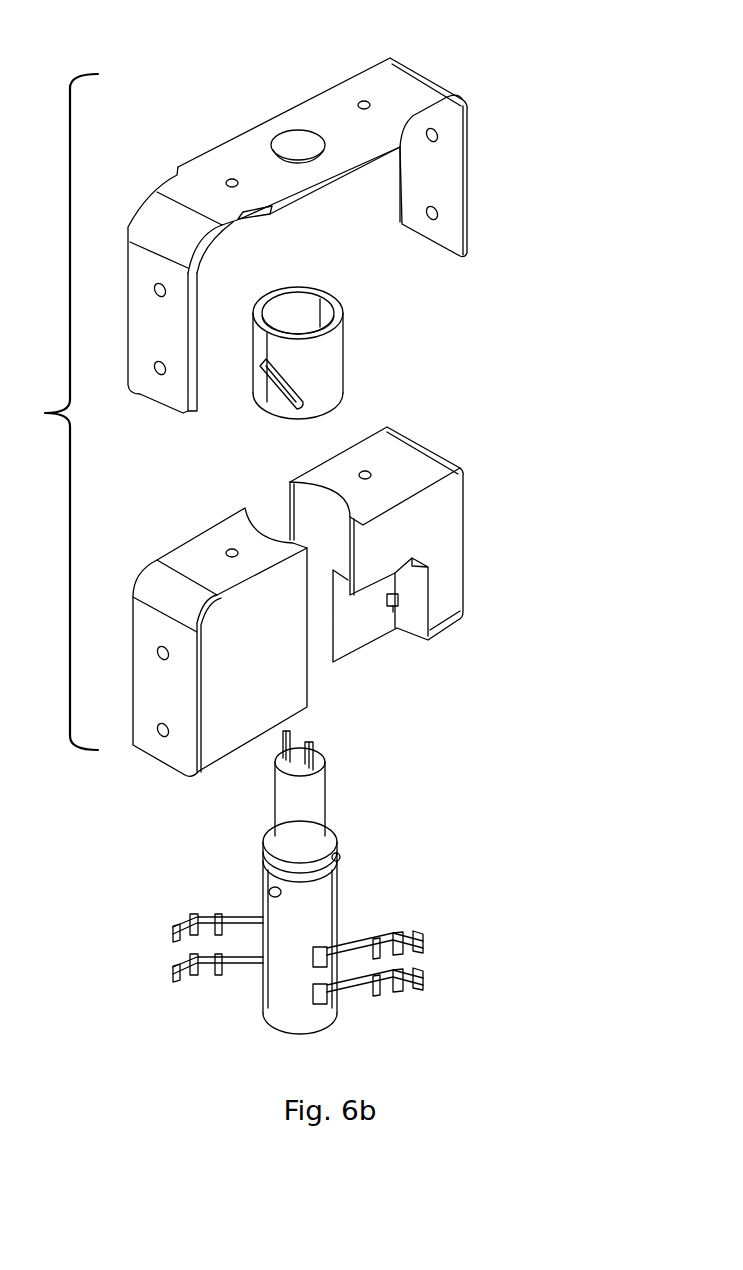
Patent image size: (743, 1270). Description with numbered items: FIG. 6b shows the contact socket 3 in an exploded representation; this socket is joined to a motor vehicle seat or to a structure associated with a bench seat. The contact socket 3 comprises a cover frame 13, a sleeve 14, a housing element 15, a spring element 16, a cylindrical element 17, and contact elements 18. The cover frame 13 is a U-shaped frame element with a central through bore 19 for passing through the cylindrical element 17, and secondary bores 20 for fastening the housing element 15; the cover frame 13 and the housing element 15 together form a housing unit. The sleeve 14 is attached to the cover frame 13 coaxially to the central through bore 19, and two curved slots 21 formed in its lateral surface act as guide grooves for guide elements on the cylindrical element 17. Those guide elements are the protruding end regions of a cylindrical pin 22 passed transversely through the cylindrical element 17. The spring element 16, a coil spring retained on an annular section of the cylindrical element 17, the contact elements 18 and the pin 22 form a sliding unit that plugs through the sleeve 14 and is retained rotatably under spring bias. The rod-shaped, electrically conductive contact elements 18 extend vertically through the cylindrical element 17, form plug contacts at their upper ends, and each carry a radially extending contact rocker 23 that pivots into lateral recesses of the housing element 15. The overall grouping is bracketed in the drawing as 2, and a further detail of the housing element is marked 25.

The valve assembly 2 is at (49, 420).
The contact socket 3 is at (345, 550).
The cover frame 13 is at (184, 162).
The sleeve 14 is at (313, 369).
The housing element 15 is at (422, 519).
The spring element 16 is at (324, 849).
The cylindrical element 17 is at (330, 867).
The contact elements 18 is at (293, 734).
The central through bore 19 is at (284, 136).
The secondary bores 20 is at (363, 101).
The curved slots 21 is at (282, 392).
The pin 22 is at (268, 891).
The contact rocker 23 is at (423, 939).
The clamp groove 25 is at (333, 492).